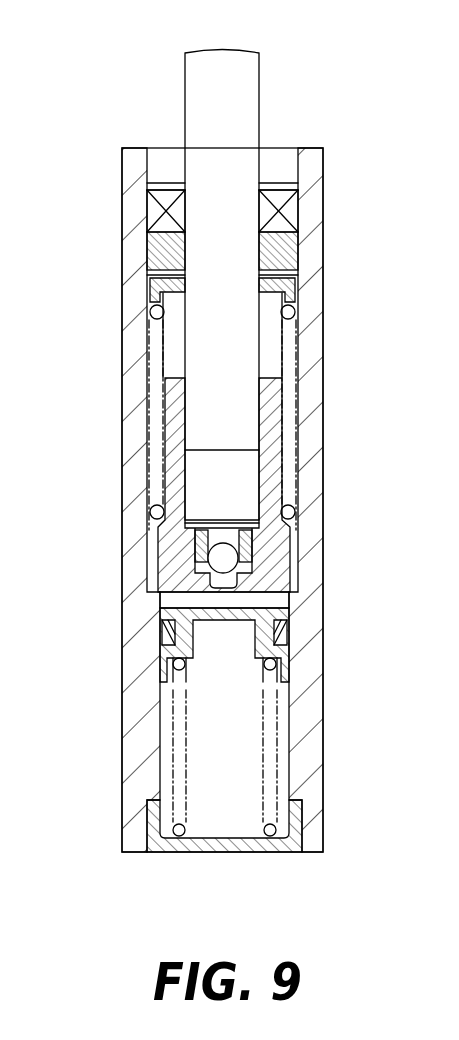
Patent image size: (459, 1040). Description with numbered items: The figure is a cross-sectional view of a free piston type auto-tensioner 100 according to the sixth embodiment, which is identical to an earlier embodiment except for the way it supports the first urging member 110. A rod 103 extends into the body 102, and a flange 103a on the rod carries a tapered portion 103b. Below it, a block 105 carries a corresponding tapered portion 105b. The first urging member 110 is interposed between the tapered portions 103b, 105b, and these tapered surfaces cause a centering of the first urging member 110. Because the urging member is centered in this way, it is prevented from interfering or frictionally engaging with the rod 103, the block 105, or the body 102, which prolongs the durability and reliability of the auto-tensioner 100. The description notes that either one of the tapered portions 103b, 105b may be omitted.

The auto-tensioner 100 is at (305, 91).
The body 102 is at (312, 410).
The rod 103 is at (197, 95).
The flange 103a is at (285, 285).
The tapered portion 103b is at (152, 307).
The block 105 is at (176, 478).
The tapered portion 105b is at (153, 520).
The first urging member 110 is at (156, 393).